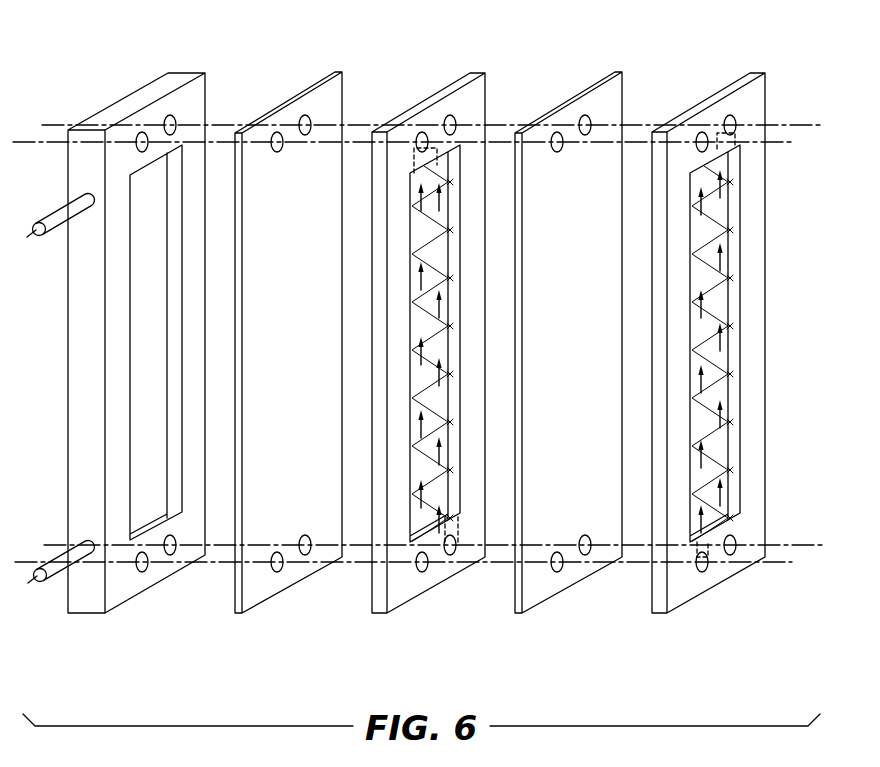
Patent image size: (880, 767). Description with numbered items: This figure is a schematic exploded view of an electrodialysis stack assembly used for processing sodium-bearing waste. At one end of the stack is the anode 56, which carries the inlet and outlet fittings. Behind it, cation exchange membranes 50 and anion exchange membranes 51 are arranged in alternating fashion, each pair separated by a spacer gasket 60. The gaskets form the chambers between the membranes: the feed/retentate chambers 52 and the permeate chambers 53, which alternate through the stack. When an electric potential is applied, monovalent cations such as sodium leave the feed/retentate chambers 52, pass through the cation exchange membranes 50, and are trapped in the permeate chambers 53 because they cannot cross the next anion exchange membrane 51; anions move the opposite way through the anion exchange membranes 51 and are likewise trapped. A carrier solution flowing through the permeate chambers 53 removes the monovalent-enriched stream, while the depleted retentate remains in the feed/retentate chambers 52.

The anode 56 is at (128, 105).
The cation exchange membrane 50 is at (252, 593).
The anion exchange membrane 51 is at (532, 593).
The spacer gasket 60 is at (398, 593).
The permeate chamber 53 is at (437, 172).
The feed/retentate chamber 52 is at (713, 172).